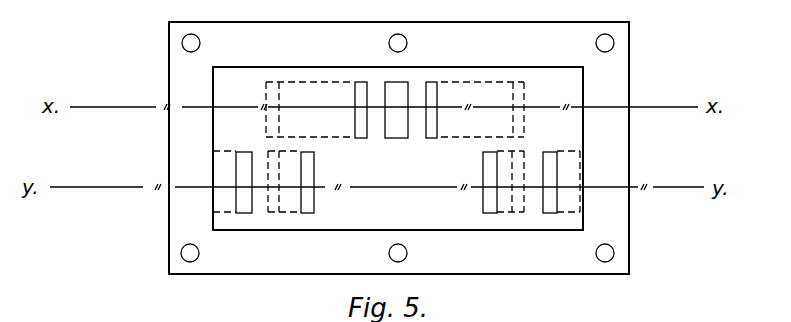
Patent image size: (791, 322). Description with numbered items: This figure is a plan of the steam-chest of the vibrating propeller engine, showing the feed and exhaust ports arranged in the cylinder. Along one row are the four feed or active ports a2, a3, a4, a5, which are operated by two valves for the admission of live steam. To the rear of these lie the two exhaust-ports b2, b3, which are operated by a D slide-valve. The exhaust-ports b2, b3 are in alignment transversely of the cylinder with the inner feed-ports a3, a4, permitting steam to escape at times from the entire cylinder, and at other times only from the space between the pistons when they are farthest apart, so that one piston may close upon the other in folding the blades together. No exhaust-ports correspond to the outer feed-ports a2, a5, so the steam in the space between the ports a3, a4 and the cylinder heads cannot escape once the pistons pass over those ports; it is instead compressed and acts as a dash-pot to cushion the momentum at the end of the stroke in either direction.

The exhaust-port b2 is at (268, 95).
The exhaust-port b3 is at (518, 125).
The feed-port a2 is at (222, 174).
The feed-port a3 is at (273, 213).
The feed-port a4 is at (513, 215).
The feed-port a5 is at (566, 200).